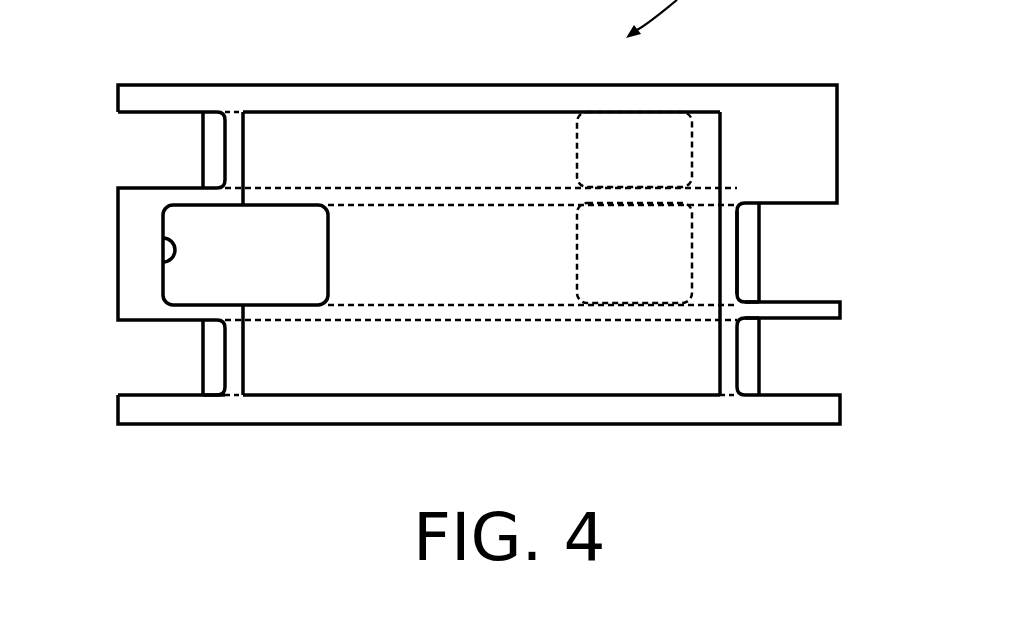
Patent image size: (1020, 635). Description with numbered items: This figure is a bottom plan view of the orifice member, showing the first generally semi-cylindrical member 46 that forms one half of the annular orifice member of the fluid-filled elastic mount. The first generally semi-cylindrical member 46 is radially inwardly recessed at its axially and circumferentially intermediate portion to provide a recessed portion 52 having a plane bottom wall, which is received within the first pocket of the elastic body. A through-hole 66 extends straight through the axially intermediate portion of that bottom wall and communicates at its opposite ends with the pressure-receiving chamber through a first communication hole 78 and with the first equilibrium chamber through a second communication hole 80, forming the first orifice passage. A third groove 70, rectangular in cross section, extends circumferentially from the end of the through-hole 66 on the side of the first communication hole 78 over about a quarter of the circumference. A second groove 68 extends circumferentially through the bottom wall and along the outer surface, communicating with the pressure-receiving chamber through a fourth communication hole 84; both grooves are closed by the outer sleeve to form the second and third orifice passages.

The first generally semi-cylindrical member 46 is at (797, 108).
The recessed portion 52 is at (312, 112).
The through-hole 66 is at (471, 303).
The second groove 68 is at (147, 320).
The third groove 70 is at (802, 204).
The first communication hole 78 is at (684, 257).
The second communication hole 80 is at (163, 262).
The fourth communication hole 84 is at (623, 112).